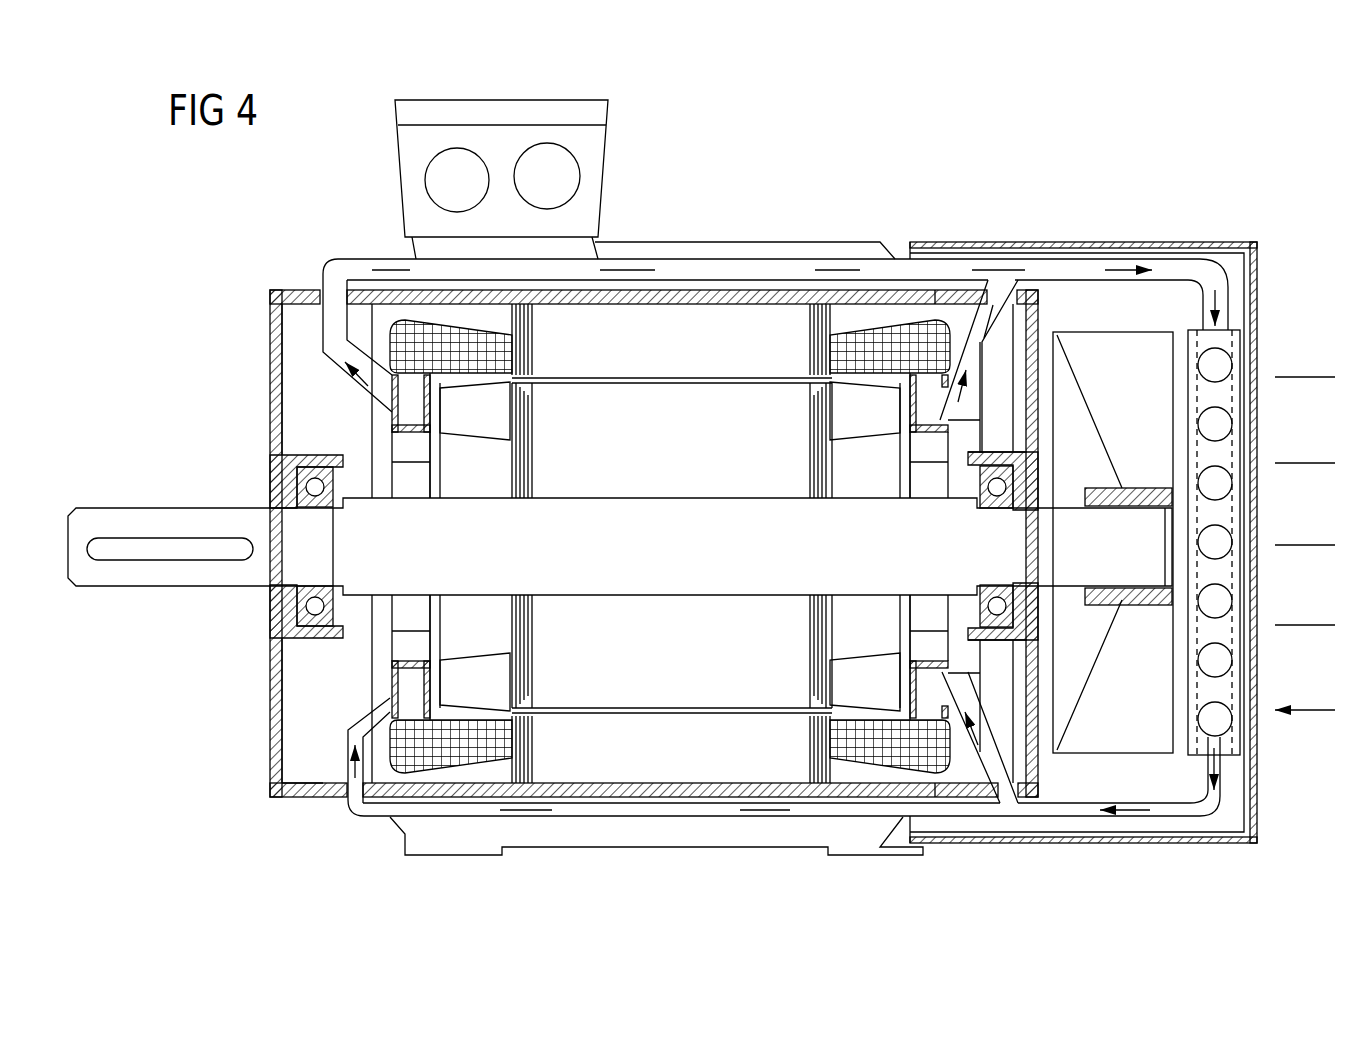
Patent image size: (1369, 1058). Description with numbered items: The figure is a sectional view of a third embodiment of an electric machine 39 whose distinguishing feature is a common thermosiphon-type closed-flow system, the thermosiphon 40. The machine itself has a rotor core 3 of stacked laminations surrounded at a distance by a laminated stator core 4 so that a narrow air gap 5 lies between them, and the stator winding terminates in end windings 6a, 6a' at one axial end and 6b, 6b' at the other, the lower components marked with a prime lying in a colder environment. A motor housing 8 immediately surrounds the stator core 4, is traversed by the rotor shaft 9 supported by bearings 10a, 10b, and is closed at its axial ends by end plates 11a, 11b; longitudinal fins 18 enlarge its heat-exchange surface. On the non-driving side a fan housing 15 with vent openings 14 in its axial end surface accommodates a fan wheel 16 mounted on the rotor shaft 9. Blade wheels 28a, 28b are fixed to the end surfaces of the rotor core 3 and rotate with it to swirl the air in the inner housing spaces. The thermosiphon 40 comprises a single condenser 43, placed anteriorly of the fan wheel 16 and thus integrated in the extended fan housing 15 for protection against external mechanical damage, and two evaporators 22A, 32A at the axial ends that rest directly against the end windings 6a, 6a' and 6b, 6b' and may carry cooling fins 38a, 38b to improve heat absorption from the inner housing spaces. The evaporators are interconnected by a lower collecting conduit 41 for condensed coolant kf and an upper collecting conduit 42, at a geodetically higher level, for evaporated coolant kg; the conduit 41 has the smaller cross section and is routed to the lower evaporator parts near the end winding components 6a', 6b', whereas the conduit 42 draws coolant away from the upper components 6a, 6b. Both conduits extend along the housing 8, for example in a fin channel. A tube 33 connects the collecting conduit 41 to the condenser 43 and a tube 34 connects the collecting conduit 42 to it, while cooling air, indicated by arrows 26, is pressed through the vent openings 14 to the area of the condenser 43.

The rotor core 3 is at (716, 488).
The stator core 4 is at (706, 370).
The air gap 5 is at (604, 376).
The end winding 6a is at (482, 345).
The end winding 6b is at (861, 346).
The end winding 6a' is at (482, 746).
The end winding 6b' is at (857, 746).
The motor housing 8 is at (674, 292).
The rotor shaft 9 is at (668, 585).
The bearing 10a is at (318, 497).
The bearing 10b is at (1000, 500).
The end plate 11a is at (272, 394).
The end plate 11b is at (1030, 642).
The vent openings 14 is at (1262, 366).
The fan housing 15 is at (1083, 245).
The fan wheel 16 is at (1078, 390).
The longitudinal fins 18 is at (682, 838).
The evaporator 22A is at (415, 412).
The arrows 26 is at (1300, 625).
The blade wheel 28a is at (470, 430).
The blade wheel 28b is at (872, 665).
The evaporator 32A is at (905, 417).
The tube 33 is at (1172, 817).
The tube 34 is at (1172, 268).
The cooling fins 38a is at (415, 643).
The cooling fins 38b is at (912, 452).
The electric machine 39 is at (898, 150).
The thermosiphon 40 is at (1044, 266).
The lower collecting conduit 41 is at (712, 816).
The upper collecting conduit 42 is at (765, 268).
The condenser 43 is at (1200, 400).
The evaporated coolant kg is at (622, 268).
The condensed coolant kf is at (530, 816).